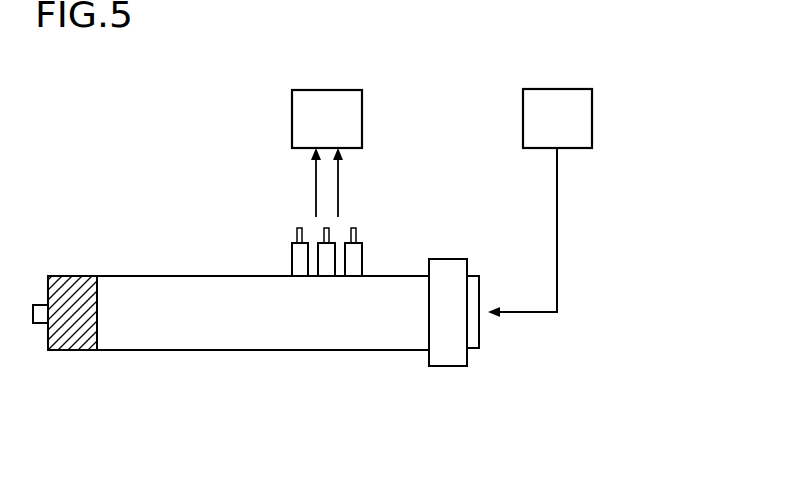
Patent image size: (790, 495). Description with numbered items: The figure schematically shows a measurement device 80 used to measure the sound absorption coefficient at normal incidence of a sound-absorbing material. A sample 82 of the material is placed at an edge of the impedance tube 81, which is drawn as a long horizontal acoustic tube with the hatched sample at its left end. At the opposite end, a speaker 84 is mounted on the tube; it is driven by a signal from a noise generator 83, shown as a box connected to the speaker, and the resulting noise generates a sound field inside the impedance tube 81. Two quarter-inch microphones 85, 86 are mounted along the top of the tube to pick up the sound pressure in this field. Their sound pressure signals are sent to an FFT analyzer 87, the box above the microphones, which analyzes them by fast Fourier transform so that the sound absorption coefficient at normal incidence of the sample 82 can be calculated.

The measurement device 80 is at (162, 112).
The impedance tube 81 is at (284, 335).
The sample 82 is at (73, 338).
The noise generator 83 is at (583, 123).
The speaker 84 is at (447, 355).
The quarter-inch microphone 85 is at (358, 245).
The quarter-inch microphone 86 is at (297, 245).
The FFT analyzer 87 is at (351, 123).